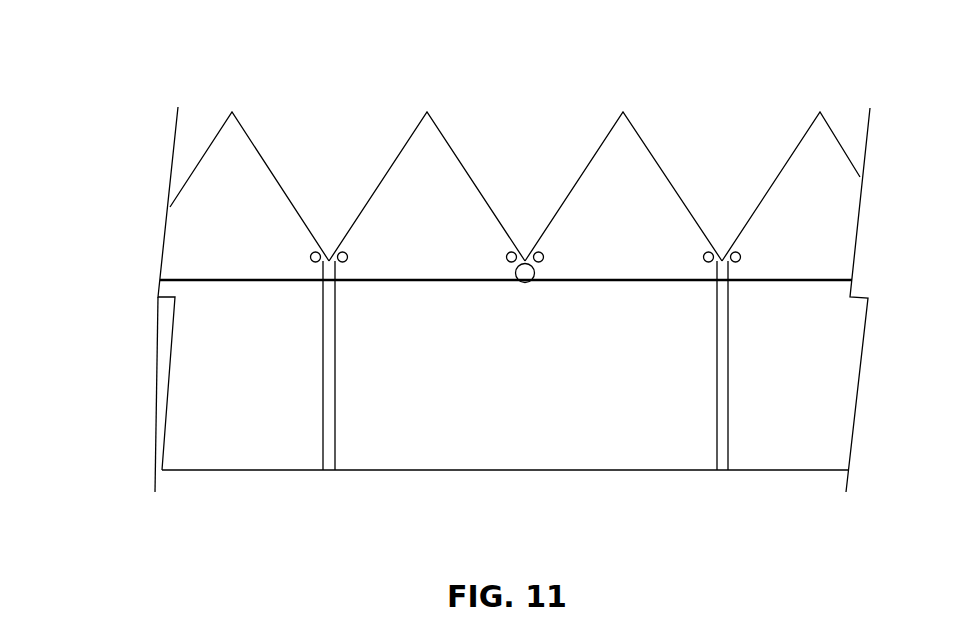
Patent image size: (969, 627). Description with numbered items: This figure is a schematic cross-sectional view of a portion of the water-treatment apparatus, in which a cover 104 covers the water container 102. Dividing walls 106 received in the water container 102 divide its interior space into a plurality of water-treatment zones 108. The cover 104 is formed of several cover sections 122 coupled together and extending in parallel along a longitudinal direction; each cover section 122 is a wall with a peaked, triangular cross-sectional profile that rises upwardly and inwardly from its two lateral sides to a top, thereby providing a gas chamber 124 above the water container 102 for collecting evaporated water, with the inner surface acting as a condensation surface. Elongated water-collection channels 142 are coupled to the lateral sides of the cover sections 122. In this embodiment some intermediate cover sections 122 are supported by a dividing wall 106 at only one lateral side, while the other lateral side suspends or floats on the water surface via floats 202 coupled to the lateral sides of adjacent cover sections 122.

The water container 102 is at (250, 472).
The cover 104 is at (125, 99).
The dividing wall 106 is at (323, 375).
The water-treatment zone 108 is at (227, 332).
The cover section 122 is at (270, 168).
The gas chamber 124 is at (212, 194).
The water-collection channel 142 is at (312, 253).
The float 202 is at (533, 282).